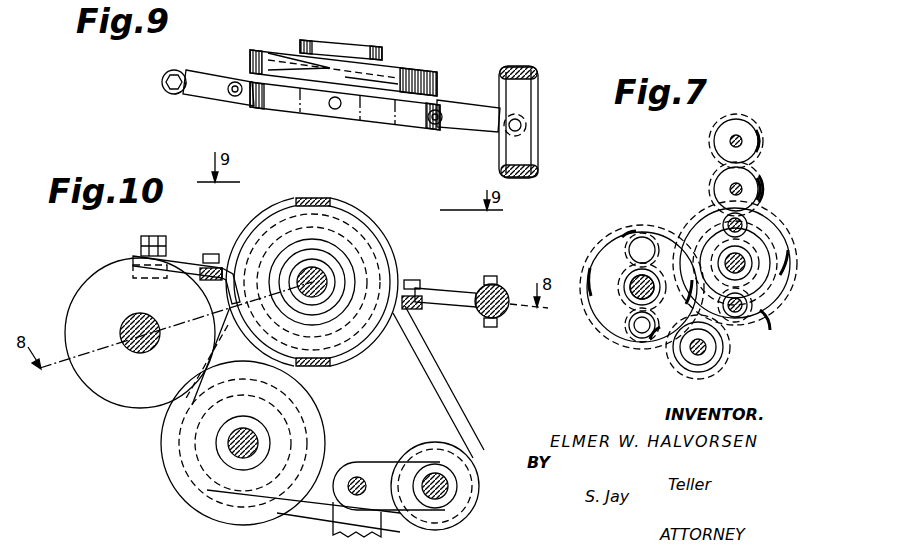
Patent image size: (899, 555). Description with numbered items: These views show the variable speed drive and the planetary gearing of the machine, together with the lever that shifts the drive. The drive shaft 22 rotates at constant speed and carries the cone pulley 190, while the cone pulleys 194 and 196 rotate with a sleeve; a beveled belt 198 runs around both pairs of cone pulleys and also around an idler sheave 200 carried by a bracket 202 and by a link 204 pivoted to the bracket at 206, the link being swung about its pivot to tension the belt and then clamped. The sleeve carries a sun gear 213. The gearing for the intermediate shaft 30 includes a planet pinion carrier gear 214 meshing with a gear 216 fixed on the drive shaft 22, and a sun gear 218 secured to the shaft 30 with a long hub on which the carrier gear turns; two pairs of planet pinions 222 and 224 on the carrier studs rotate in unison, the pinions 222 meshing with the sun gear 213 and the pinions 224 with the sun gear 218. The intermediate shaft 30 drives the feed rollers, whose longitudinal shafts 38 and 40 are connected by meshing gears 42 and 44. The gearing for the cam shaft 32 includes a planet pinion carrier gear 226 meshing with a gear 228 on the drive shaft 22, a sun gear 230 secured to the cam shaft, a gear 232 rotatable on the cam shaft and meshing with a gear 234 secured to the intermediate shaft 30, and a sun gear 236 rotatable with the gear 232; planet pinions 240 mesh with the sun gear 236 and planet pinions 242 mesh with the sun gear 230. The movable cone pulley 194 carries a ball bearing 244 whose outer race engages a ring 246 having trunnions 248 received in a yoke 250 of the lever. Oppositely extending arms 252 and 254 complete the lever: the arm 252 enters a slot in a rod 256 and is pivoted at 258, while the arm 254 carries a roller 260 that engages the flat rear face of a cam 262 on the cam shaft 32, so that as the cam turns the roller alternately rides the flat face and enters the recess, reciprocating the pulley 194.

In FIG. 10, the drive shaft 22 is at (232, 452).
In FIG. 7, the drive shaft 22 is at (708, 357).
In FIG. 10, the intermediate shaft 30 is at (322, 277).
In FIG. 7, the intermediate shaft 30 is at (745, 272).
In FIG. 10, the cam shaft 32 is at (136, 342).
In FIG. 7, the cam shaft 32 is at (630, 296).
In FIG. 7, the longitudinal shaft 38 is at (735, 138).
In FIG. 7, the longitudinal shaft 40 is at (759, 187).
In FIG. 7, the gear 42 is at (748, 126).
In FIG. 7, the gear 44 is at (741, 185).
In FIG. 10, the cone pulley 190 is at (318, 427).
In FIG. 9, the cone pulley 194 is at (432, 95).
In FIG. 9, the cone pulley 196 is at (413, 68).
In FIG. 10, the belt 198 is at (428, 370).
In FIG. 10, the idler sheave 200 is at (468, 466).
In FIG. 10, the bracket 202 is at (333, 525).
In FIG. 10, the link 204 is at (383, 463).
In FIG. 10, the pivot 206 is at (357, 477).
In FIG. 7, the sun gear 213 is at (763, 190).
In FIG. 7, the planet pinion carrier gear 214 is at (718, 232).
In FIG. 7, the gear 216 is at (712, 372).
In FIG. 7, the sun gear 218 is at (760, 245).
In FIG. 7, the planet pinions 222 is at (724, 250).
In FIG. 7, the planet pinions 224 is at (730, 240).
In FIG. 7, the planet pinion carrier gear 226 is at (606, 247).
In FIG. 7, the gear 228 is at (688, 364).
In FIG. 7, the sun gear 230 is at (625, 273).
In FIG. 7, the gear 232 is at (632, 327).
In FIG. 7, the gear 234 is at (698, 250).
In FIG. 7, the sun gear 236 is at (626, 282).
In FIG. 7, the planet pinions 240 is at (620, 232).
In FIG. 7, the planet pinions 242 is at (643, 237).
In FIG. 10, the ball bearing 244 is at (342, 256).
In FIG. 10, the ring 246 is at (352, 236).
In FIG. 9, the trunnions 248 is at (335, 110).
In FIG. 10, the trunnions 248 is at (326, 200).
In FIG. 10, the yoke 250 is at (362, 207).
In FIG. 9, the arm 252 is at (472, 127).
In FIG. 10, the arm 252 is at (447, 290).
In FIG. 9, the arm 254 is at (209, 93).
In FIG. 10, the arm 254 is at (188, 258).
In FIG. 9, the rod 256 is at (537, 77).
In FIG. 10, the rod 256 is at (480, 279).
In FIG. 9, the pivot 258 is at (521, 125).
In FIG. 10, the pivot 258 is at (501, 285).
In FIG. 9, the roller 260 is at (177, 72).
In FIG. 10, the roller 260 is at (141, 263).
In FIG. 10, the cam 262 is at (81, 292).